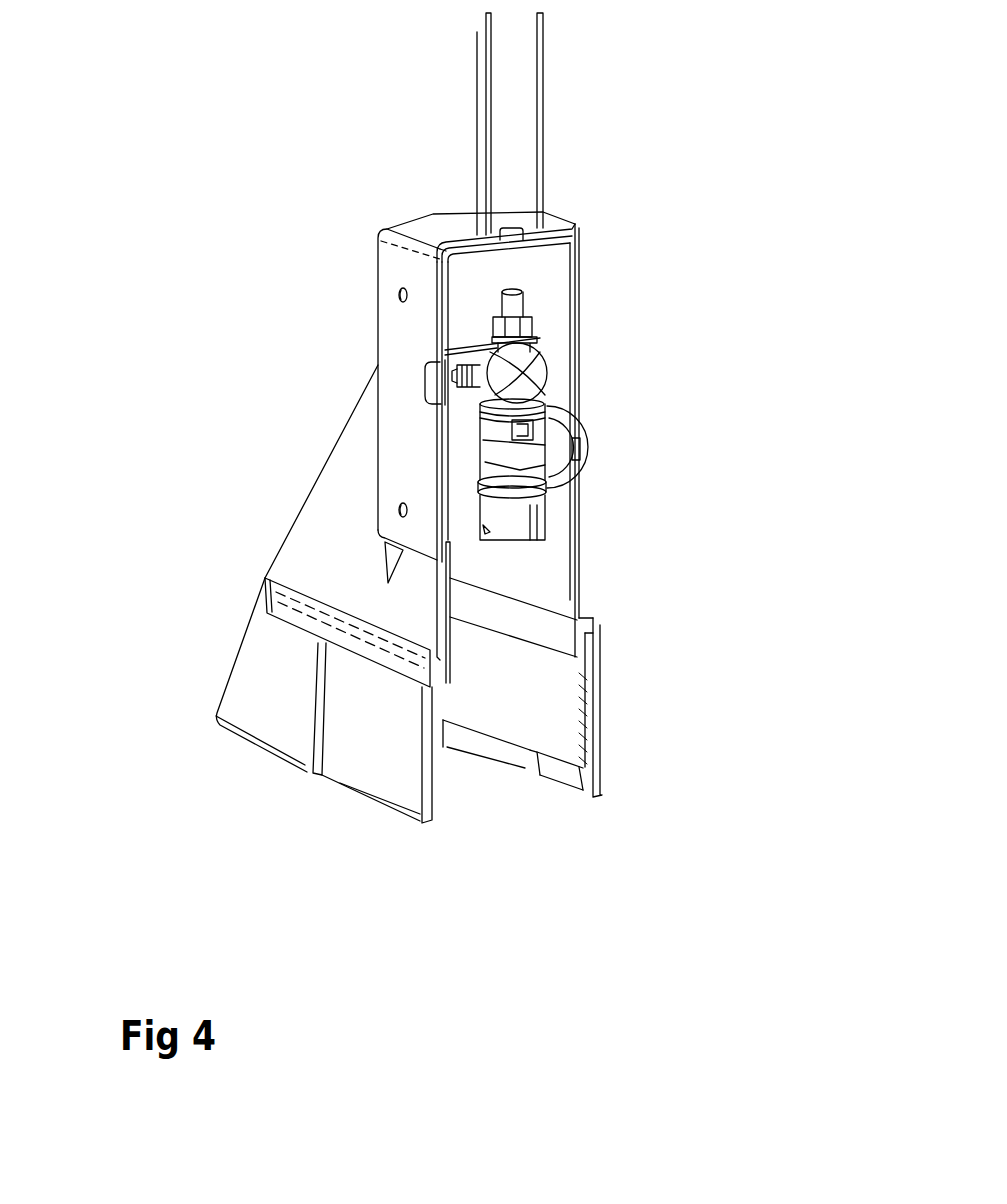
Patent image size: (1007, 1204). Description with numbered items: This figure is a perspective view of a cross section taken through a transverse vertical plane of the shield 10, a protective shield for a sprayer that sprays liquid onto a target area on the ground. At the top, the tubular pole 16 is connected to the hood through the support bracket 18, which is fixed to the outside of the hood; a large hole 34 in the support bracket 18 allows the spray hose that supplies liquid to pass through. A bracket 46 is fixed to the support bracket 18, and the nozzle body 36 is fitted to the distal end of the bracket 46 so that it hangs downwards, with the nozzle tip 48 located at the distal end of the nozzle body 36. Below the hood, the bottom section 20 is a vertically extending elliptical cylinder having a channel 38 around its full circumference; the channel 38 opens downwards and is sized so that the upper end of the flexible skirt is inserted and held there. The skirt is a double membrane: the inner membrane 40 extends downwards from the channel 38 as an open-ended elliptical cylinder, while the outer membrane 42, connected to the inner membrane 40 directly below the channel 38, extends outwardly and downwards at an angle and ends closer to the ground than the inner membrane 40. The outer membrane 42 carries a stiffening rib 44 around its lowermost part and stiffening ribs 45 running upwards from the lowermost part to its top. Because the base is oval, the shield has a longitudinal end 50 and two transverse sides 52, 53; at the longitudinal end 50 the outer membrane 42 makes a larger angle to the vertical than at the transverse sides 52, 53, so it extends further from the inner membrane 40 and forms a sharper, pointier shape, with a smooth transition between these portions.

The shield 10 is at (708, 155).
The tubular pole 16 is at (553, 72).
The support bracket 18 is at (437, 222).
The bottom section 20 is at (272, 578).
The large hole 34 is at (420, 372).
The nozzle body 36 is at (595, 430).
The channel 38 is at (592, 645).
The inner membrane 40 is at (533, 750).
The outer membrane 42 is at (598, 728).
The stiffening rib 44 is at (330, 792).
The stiffening ribs 45 is at (308, 743).
The bracket 46 is at (540, 340).
The nozzle tip 48 is at (548, 500).
The longitudinal end 50 is at (237, 674).
The transverse side 52 is at (418, 760).
The transverse side 53 is at (578, 778).